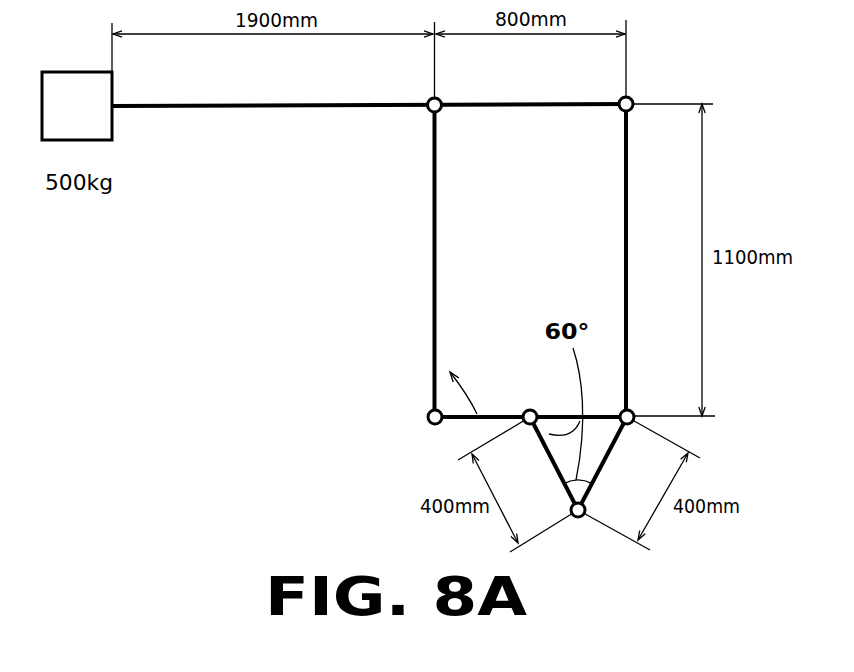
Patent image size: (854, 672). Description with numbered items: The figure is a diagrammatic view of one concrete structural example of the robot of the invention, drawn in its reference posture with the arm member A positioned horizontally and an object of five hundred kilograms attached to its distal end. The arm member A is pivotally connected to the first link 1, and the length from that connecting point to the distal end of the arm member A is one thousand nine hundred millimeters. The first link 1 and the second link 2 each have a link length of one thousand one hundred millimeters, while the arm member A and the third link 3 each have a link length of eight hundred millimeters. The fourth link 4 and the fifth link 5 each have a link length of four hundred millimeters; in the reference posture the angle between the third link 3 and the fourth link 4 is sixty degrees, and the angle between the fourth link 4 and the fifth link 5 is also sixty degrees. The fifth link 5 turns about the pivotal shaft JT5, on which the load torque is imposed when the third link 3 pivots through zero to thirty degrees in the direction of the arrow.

The arm member A is at (275, 108).
The first link 1 is at (433, 233).
The second link 2 is at (624, 237).
The third link 3 is at (477, 418).
The fourth link 4 is at (604, 460).
The fifth link 5 is at (557, 470).
The pivotal shaft JT5 is at (527, 415).